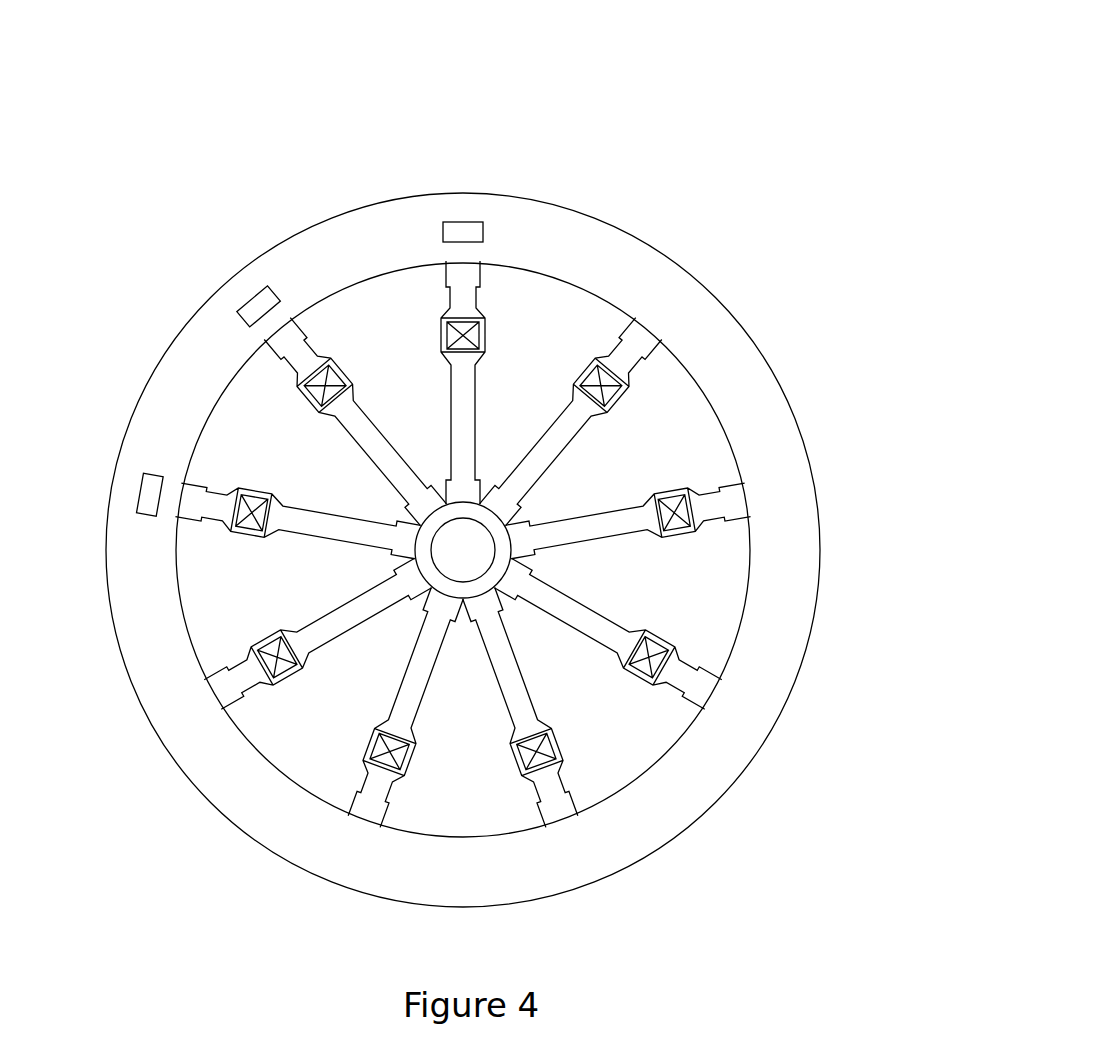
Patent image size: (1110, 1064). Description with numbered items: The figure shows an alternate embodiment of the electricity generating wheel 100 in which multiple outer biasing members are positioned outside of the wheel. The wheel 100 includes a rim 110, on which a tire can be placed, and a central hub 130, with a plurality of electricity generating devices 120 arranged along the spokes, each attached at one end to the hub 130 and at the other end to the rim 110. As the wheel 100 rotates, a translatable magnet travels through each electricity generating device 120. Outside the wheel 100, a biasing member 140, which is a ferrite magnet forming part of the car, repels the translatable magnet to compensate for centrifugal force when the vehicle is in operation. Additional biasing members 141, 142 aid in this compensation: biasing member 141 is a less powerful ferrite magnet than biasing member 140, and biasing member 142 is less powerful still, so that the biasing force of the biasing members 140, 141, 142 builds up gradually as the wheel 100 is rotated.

The electricity generating wheel 100 is at (607, 107).
The rim 110 is at (633, 275).
The electricity generating device 120 is at (636, 365).
The hub 130 is at (493, 590).
The biasing member 140 is at (462, 230).
The biasing member 141 is at (257, 302).
The biasing member 142 is at (143, 498).